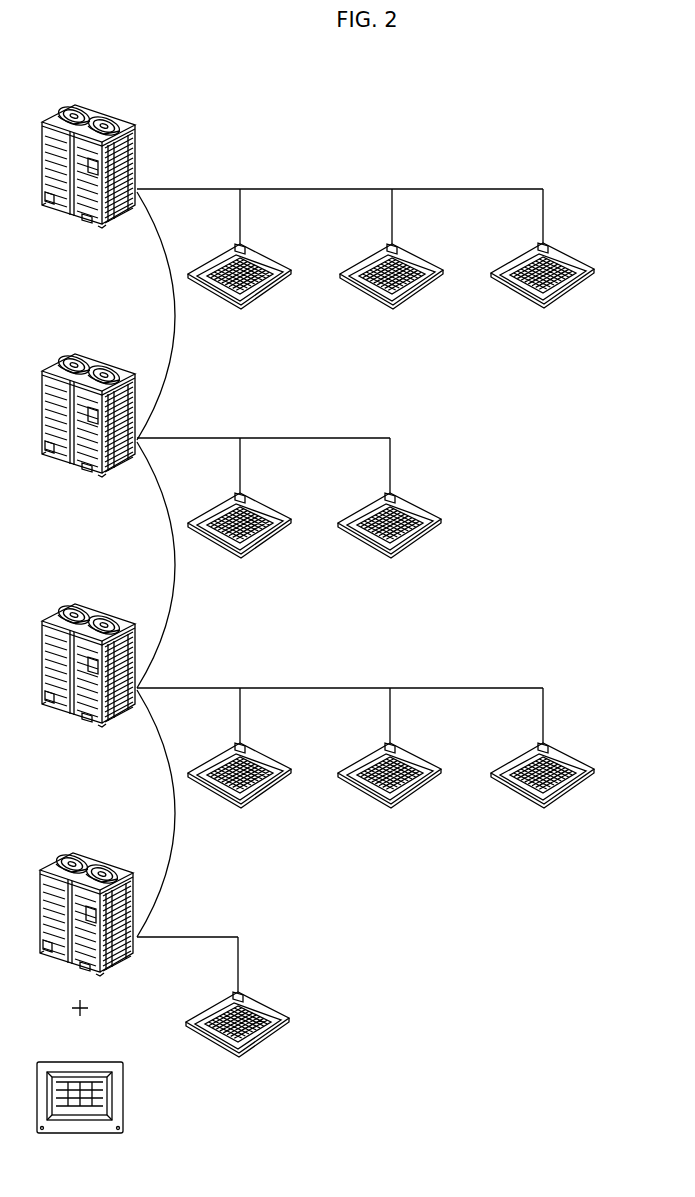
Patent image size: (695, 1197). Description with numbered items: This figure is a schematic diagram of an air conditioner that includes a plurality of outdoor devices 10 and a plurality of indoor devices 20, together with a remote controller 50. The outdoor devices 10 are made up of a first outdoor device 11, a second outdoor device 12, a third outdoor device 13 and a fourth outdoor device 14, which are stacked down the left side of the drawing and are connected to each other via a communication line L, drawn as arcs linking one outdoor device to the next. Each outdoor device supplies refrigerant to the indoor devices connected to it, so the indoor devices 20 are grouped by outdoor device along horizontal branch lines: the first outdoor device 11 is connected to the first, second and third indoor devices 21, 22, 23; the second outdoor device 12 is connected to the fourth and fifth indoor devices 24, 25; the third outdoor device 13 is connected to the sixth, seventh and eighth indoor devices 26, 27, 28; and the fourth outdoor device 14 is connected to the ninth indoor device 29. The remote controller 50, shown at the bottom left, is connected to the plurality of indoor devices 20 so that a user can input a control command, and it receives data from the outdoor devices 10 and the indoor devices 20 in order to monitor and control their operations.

The outdoor devices 10 is at (33, 78).
The first outdoor device 11 is at (113, 122).
The second outdoor device 12 is at (114, 372).
The third outdoor device 13 is at (114, 622).
The fourth outdoor device 14 is at (112, 871).
The indoor devices 20 is at (570, 165).
The first indoor device 21 is at (263, 257).
The second indoor device 22 is at (415, 257).
The third indoor device 23 is at (566, 256).
The fourth indoor device 24 is at (263, 506).
The fifth indoor device 25 is at (413, 506).
The sixth indoor device 26 is at (263, 756).
The seventh indoor device 27 is at (413, 756).
The eighth indoor device 28 is at (566, 756).
The ninth indoor device 29 is at (261, 1005).
The remote controller 50 is at (109, 1062).
The communication line L is at (176, 330).